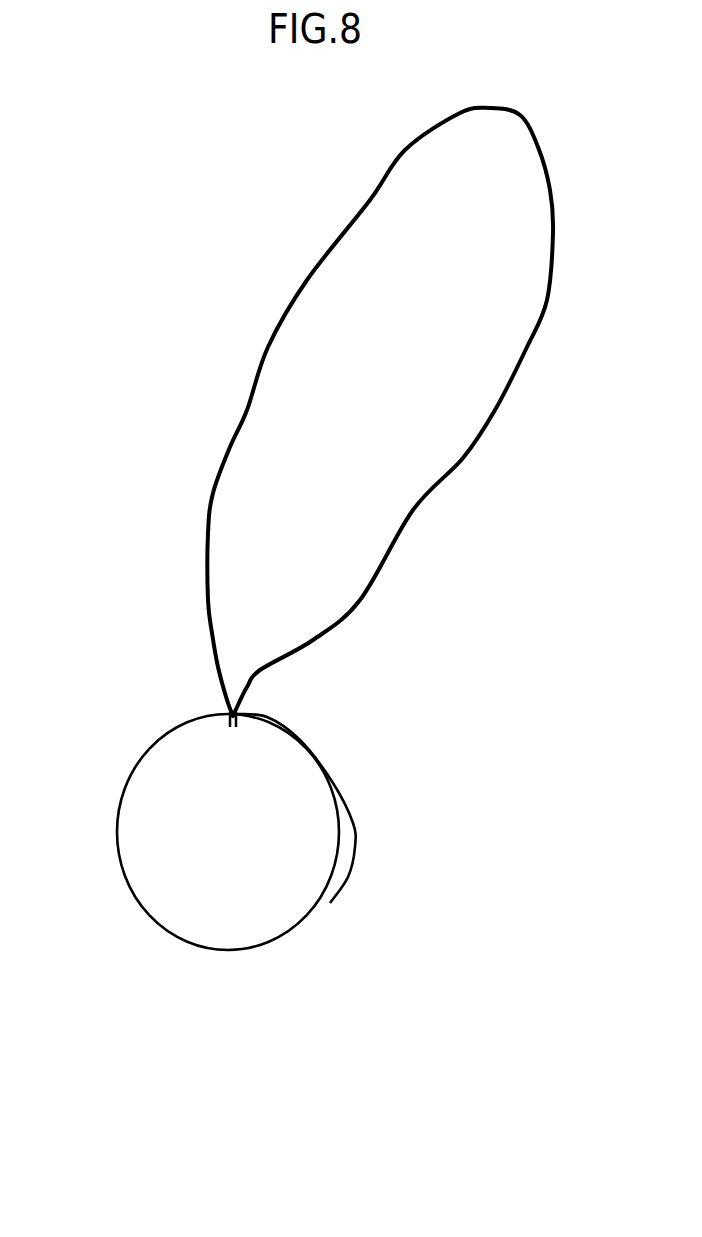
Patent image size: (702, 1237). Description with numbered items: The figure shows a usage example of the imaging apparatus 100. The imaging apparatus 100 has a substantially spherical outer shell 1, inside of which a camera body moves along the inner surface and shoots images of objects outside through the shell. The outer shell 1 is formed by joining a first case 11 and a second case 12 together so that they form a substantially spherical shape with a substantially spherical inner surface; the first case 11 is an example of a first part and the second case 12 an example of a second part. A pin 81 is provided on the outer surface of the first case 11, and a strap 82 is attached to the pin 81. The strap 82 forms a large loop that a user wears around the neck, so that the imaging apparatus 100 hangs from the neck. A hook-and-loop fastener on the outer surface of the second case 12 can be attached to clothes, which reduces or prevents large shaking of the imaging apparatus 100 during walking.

The imaging apparatus 100 is at (105, 970).
The outer shell 1 is at (275, 871).
The first case 11 is at (277, 908).
The second case 12 is at (345, 817).
The pin 81 is at (227, 723).
The strap 82 is at (222, 462).